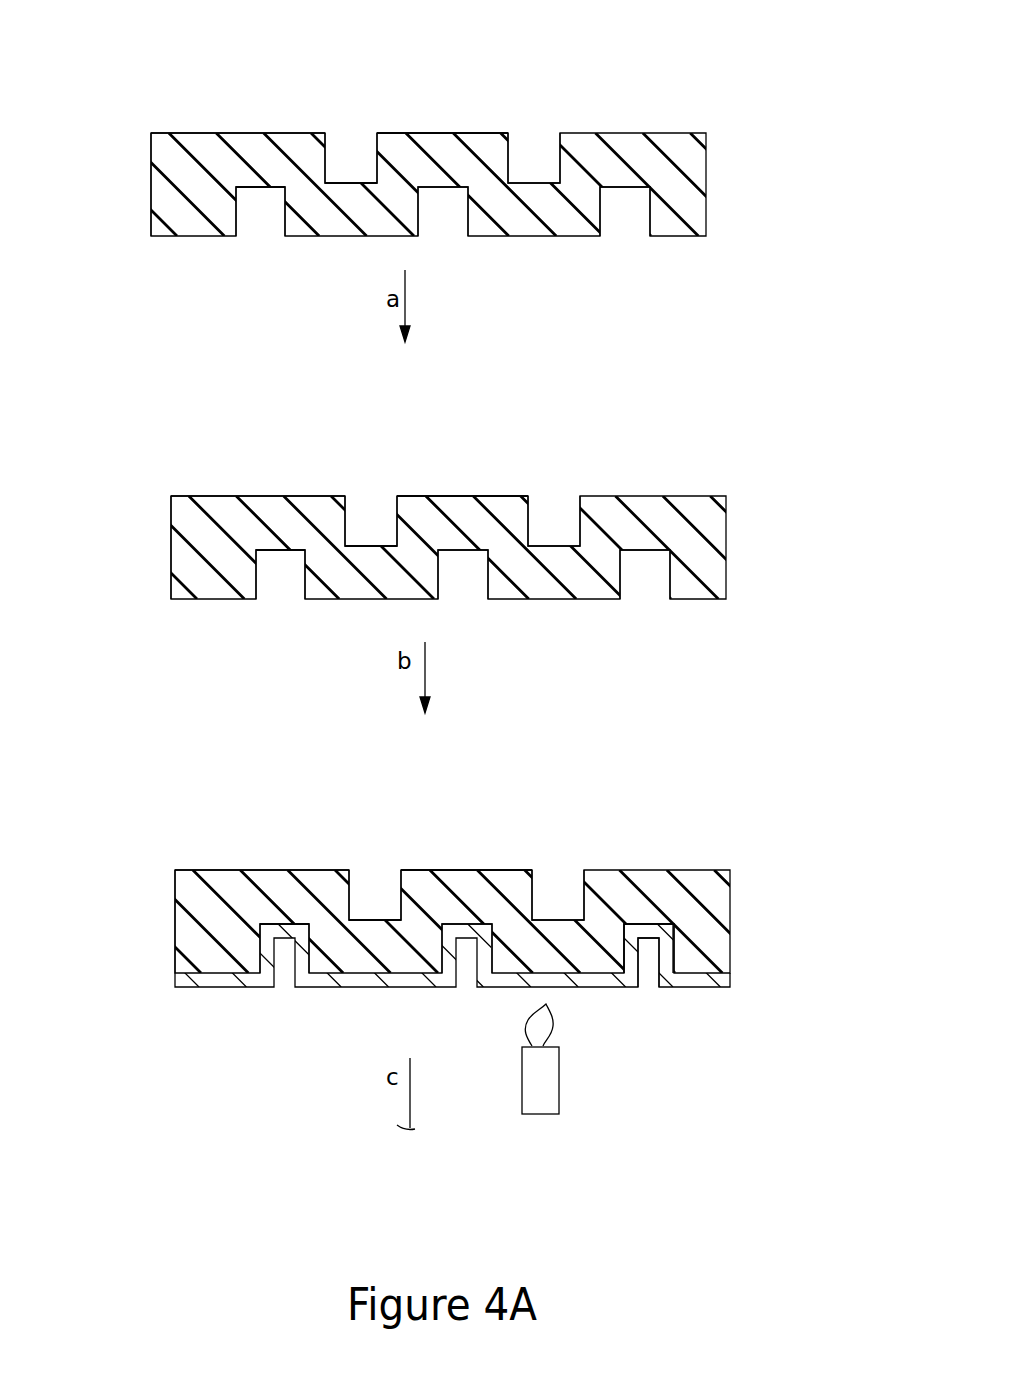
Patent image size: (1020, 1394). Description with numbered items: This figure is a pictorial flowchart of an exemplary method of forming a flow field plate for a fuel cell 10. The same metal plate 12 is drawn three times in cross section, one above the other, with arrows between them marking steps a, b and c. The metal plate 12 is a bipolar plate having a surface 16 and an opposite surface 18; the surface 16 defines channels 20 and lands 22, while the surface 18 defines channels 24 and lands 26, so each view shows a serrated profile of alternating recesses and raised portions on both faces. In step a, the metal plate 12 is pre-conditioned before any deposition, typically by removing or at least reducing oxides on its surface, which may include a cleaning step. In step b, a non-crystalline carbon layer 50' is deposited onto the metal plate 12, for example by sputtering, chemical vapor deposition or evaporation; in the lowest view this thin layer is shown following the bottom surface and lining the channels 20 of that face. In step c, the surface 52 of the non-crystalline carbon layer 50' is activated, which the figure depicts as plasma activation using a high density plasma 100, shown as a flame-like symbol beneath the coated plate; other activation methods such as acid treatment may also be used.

The fuel cell 10 is at (647, 82).
The metal plate 12 is at (182, 118).
The surface 16 is at (268, 185).
The surface 18 is at (122, 204).
The channels 20 is at (260, 220).
The lands 22 is at (375, 138).
The channels 24 is at (341, 138).
The lands 26 is at (407, 138).
The non-crystalline carbon layer 50' is at (411, 956).
The surface of non-crystalline carbon layer 52 is at (649, 937).
The high density plasma 100 is at (559, 1080).